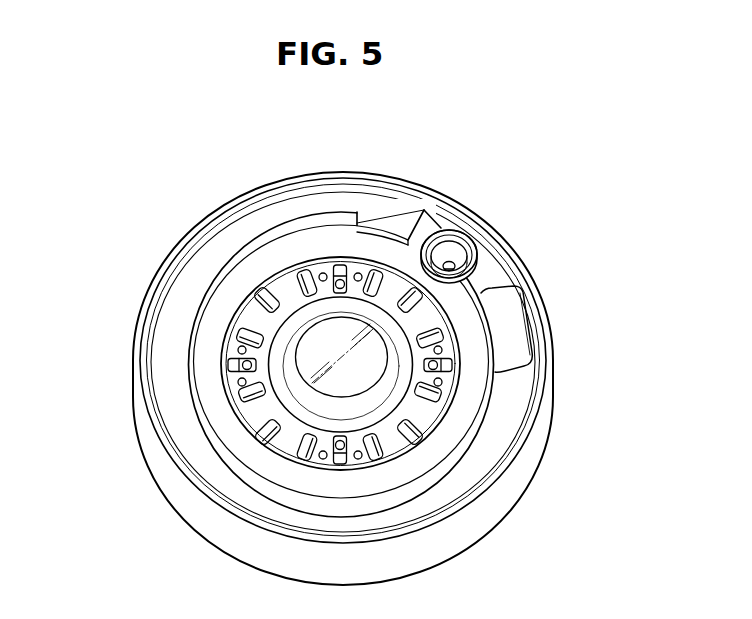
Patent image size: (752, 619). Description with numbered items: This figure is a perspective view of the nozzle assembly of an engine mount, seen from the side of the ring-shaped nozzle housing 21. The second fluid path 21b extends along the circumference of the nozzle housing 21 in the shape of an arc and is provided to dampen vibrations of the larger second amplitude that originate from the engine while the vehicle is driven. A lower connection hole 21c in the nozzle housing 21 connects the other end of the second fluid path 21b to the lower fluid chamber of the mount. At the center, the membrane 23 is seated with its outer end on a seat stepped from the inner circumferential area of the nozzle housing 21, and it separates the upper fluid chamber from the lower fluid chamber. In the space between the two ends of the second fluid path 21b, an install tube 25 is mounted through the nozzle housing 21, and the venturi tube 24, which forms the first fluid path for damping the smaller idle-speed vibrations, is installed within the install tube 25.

The nozzle housing 21 is at (543, 320).
The second fluid path 21b is at (167, 389).
The lower connection hole 21c is at (387, 221).
The membrane 23 is at (383, 397).
The venturi tube 24 is at (441, 235).
The install tube 25 is at (455, 231).